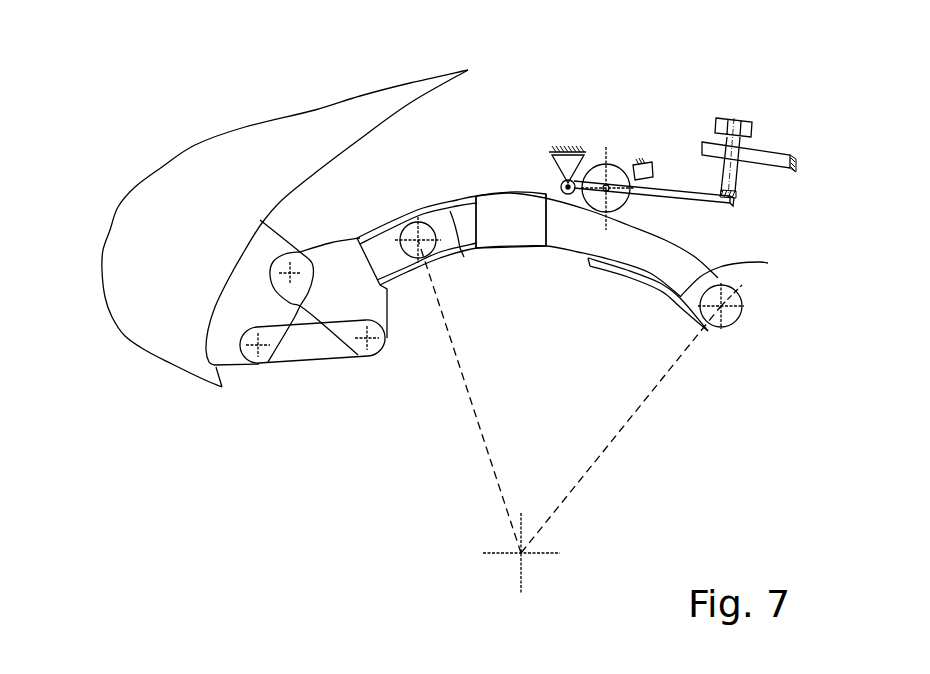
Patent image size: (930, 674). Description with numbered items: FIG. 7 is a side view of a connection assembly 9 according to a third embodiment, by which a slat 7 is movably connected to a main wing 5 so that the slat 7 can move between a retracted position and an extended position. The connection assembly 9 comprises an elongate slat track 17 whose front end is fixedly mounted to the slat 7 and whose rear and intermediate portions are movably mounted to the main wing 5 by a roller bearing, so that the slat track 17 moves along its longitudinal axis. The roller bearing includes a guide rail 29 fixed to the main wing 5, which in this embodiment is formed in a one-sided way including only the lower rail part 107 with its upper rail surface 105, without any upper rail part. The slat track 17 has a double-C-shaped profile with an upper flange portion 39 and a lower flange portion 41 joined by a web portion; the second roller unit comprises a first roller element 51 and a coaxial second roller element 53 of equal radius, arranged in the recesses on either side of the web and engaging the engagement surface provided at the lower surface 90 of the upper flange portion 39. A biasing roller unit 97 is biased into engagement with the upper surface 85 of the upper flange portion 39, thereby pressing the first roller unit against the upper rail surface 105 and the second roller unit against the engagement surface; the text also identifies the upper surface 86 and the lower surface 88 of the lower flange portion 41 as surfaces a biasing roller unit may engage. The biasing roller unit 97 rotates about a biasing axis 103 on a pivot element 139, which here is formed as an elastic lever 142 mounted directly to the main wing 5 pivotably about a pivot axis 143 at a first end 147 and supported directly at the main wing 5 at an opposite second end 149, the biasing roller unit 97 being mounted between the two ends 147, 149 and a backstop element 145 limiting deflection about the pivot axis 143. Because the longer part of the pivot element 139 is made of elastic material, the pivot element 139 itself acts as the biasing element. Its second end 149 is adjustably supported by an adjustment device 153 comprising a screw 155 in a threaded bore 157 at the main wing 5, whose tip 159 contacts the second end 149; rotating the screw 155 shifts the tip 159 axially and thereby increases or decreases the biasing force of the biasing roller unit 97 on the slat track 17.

The main wing 5 is at (557, 407).
The slat 7 is at (162, 262).
The connection assembly 9 is at (506, 82).
The slat track 17 is at (538, 232).
The guide rail 29 is at (639, 312).
The upper flange portion 39 is at (380, 230).
The lower flange portion 41 is at (402, 276).
The first roller element 51 is at (731, 320).
The second roller element 53 is at (431, 230).
The upper surface 85 is at (523, 193).
The upper surface 86 is at (476, 196).
The lower surface 88 is at (522, 248).
The lower surface 90 is at (464, 257).
The biasing roller unit 97 is at (670, 140).
The biasing axis 103 is at (608, 184).
The upper rail surface 105 is at (768, 263).
The lower rail part 107 is at (628, 275).
The pivot element 139 is at (670, 122).
The elastic lever 142 is at (660, 220).
The pivot axis 143 is at (546, 152).
The backstop element 145 is at (641, 172).
The first end 147 is at (597, 165).
The second end 149 is at (731, 204).
The adjustment device 153 is at (788, 150).
The screw 155 is at (740, 119).
The threaded bore 157 is at (750, 162).
The tip 159 is at (738, 192).